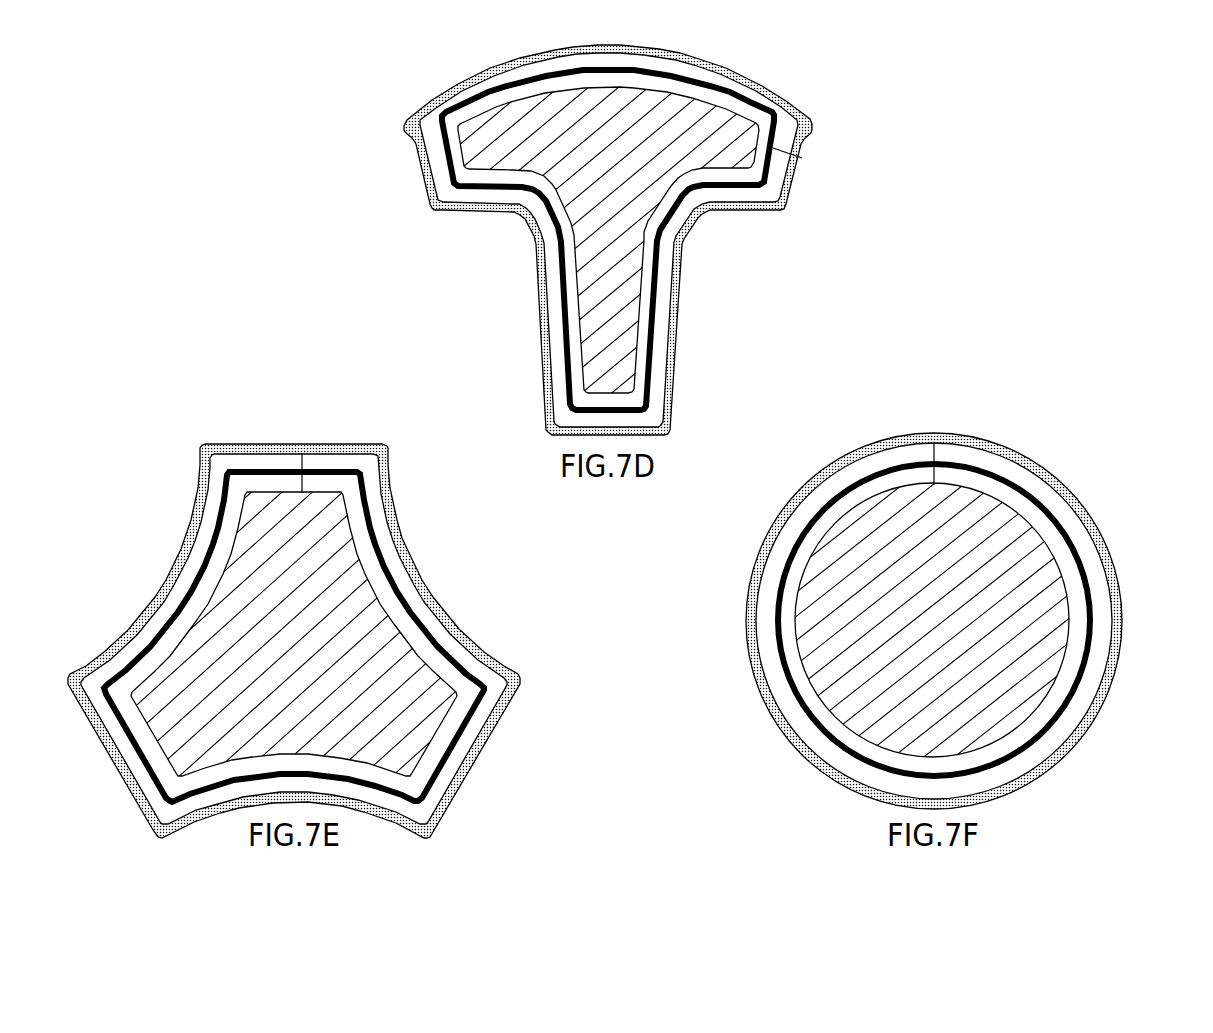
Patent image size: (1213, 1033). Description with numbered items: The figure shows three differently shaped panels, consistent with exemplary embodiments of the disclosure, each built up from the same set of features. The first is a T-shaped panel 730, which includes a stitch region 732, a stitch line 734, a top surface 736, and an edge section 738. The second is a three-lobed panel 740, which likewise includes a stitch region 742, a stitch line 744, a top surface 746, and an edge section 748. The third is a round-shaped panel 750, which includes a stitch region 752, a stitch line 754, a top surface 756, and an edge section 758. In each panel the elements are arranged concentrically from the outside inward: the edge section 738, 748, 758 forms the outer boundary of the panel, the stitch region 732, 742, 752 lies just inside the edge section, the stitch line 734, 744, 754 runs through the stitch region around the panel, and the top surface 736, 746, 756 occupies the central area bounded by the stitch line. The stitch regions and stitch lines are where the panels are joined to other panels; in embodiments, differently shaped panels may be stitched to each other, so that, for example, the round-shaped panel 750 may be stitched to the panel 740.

In FIG. 7D, the panel 730 is at (615, 229).
In FIG. 7D, the stitch region 732 is at (788, 151).
In FIG. 7D, the stitch line 734 is at (660, 240).
In FIG. 7D, the top surface 736 is at (628, 300).
In FIG. 7D, the edge section 738 is at (792, 193).
In FIG. 7E, the panel 740 is at (403, 613).
In FIG. 7E, the stitch region 742 is at (303, 470).
In FIG. 7E, the stitch line 744 is at (478, 713).
In FIG. 7E, the top surface 746 is at (408, 738).
In FIG. 7E, the edge section 748 is at (440, 608).
In FIG. 7F, the round-shaped panel 750 is at (820, 608).
In FIG. 7F, the stitch region 752 is at (938, 455).
In FIG. 7F, the stitch line 754 is at (1095, 650).
In FIG. 7F, the top surface 756 is at (1042, 678).
In FIG. 7F, the edge section 758 is at (1118, 597).